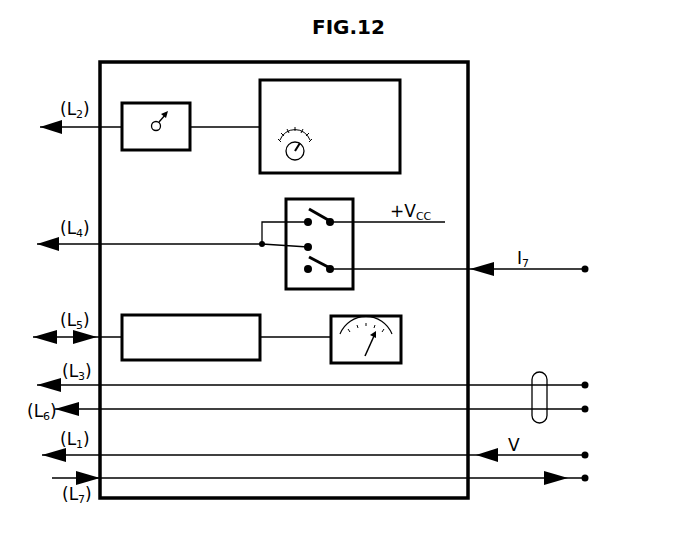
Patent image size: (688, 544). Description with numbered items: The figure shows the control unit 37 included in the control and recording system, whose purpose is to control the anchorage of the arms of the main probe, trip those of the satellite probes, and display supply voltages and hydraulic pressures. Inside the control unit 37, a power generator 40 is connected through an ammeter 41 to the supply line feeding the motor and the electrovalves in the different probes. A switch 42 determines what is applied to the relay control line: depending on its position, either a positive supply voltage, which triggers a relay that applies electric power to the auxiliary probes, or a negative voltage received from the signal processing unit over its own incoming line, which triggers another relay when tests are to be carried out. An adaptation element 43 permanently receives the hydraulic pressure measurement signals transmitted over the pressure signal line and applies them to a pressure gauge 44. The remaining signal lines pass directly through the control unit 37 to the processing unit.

The control unit 37 is at (478, 122).
The power generator 40 is at (262, 173).
The ammeter 41 is at (174, 150).
The switch 42 is at (286, 208).
The adaptation element 43 is at (165, 315).
The pressure gauge 44 is at (375, 316).